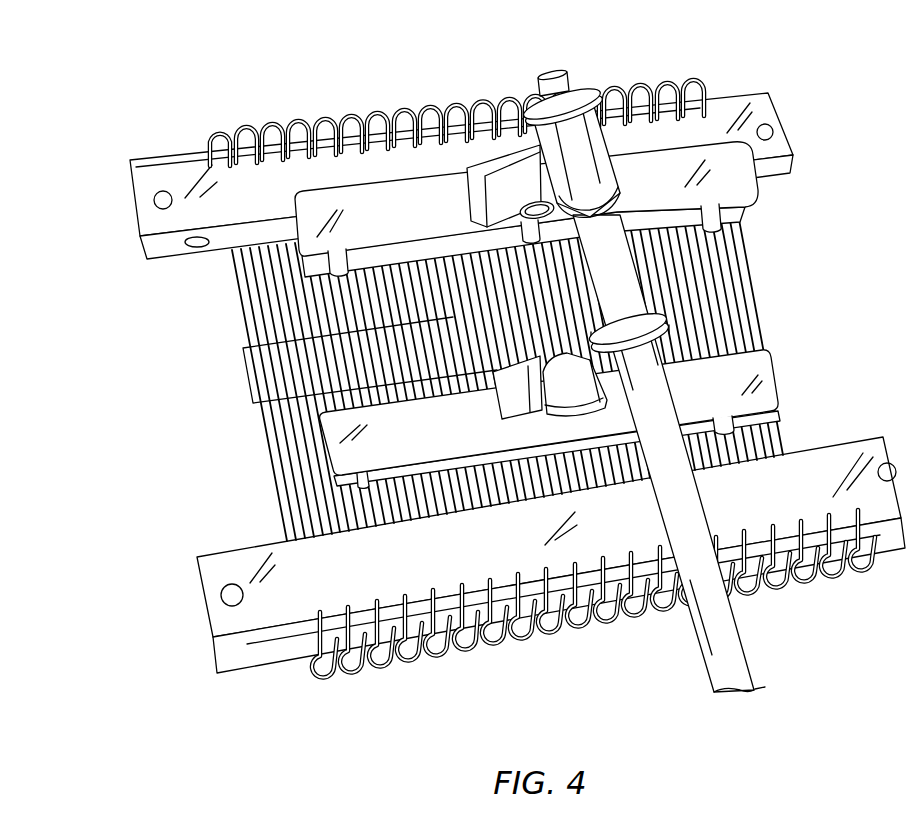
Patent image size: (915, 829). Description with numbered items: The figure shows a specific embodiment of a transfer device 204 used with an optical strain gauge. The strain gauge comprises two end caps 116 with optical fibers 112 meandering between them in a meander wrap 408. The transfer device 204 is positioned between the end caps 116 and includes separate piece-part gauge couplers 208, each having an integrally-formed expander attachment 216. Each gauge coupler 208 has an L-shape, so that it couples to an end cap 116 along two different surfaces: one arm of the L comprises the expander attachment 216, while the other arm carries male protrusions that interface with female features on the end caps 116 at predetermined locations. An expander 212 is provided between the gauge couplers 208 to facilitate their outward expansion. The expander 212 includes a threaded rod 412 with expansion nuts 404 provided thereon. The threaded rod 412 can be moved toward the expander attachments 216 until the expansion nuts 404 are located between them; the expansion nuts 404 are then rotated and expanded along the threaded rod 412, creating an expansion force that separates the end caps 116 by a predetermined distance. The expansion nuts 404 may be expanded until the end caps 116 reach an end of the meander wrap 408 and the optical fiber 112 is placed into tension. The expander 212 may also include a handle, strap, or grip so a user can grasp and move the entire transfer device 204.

The optical fibers 112 is at (222, 301).
The end caps 116 is at (167, 212).
The transfer device 204 is at (313, 437).
The gauge couplers 208 is at (735, 175).
The expander 212 is at (707, 432).
The expander attachment 216 is at (513, 403).
The expansion nuts 404 is at (597, 157).
The meander wrap 408 is at (222, 140).
The threaded rod 412 is at (713, 607).